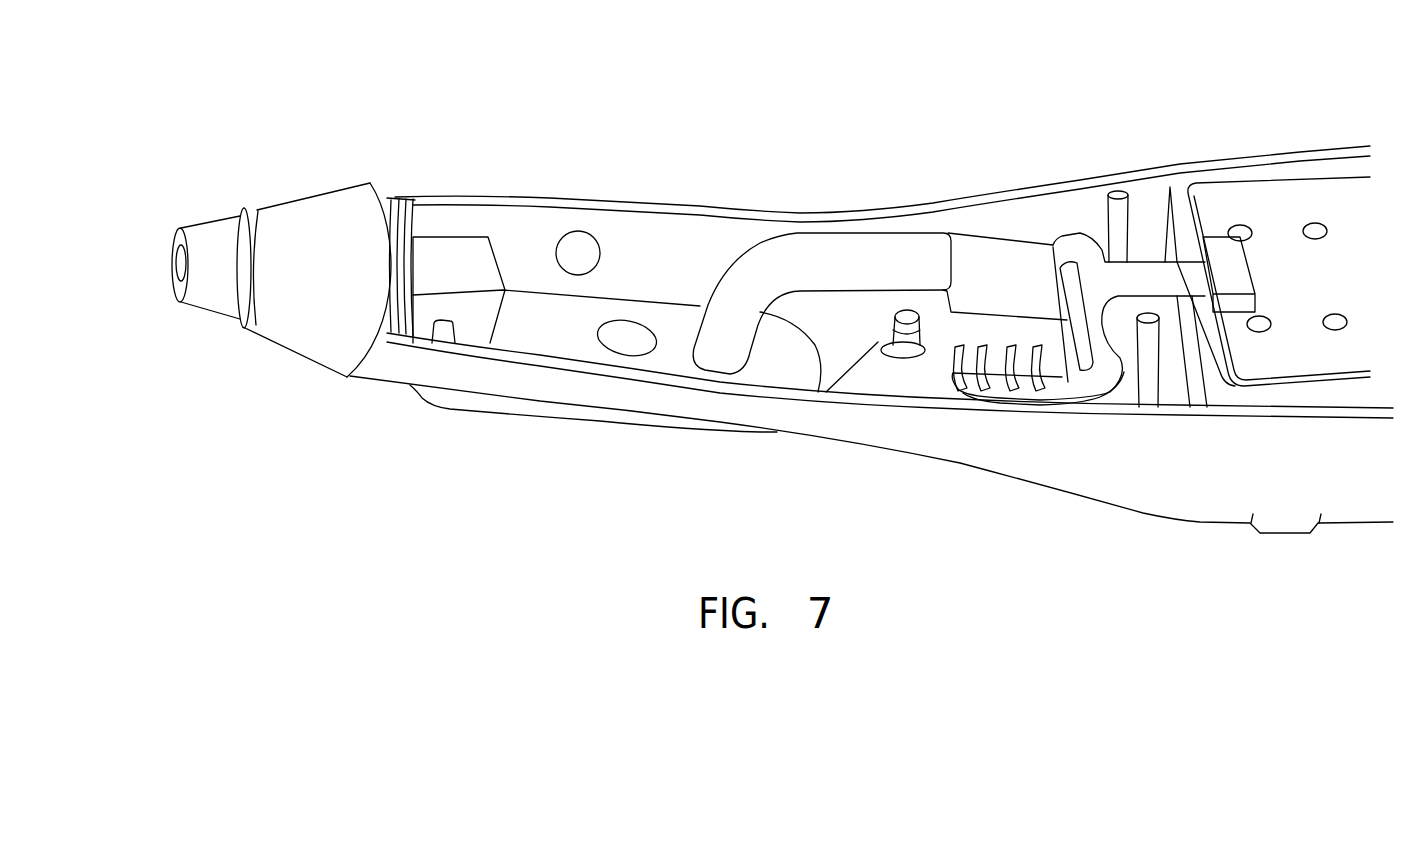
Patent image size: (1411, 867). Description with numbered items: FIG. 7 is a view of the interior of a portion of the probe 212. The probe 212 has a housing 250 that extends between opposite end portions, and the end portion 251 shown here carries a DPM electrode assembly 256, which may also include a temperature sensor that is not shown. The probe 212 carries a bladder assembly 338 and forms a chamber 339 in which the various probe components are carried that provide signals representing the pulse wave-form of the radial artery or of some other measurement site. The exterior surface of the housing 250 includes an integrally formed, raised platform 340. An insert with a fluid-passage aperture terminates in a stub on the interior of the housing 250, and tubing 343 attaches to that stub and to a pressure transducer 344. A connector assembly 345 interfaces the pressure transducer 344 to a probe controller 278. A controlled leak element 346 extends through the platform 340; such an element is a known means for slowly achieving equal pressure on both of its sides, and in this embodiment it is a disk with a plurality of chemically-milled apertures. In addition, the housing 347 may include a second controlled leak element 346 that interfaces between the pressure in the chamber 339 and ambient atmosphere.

The probe 212 is at (1189, 120).
The housing 250 is at (1018, 443).
The end portion 251 is at (304, 182).
The DPM electrode assembly 256 is at (193, 303).
The probe controller 278 is at (1277, 250).
The bladder assembly 338 is at (510, 416).
The chamber 339 is at (633, 243).
The raised platform 340 is at (675, 322).
The tubing 343 is at (810, 263).
The pressure transducer 344 is at (1005, 275).
The connector assembly 345 is at (1117, 293).
The controlled leak element 346 is at (625, 337).
The housing 347 is at (578, 253).